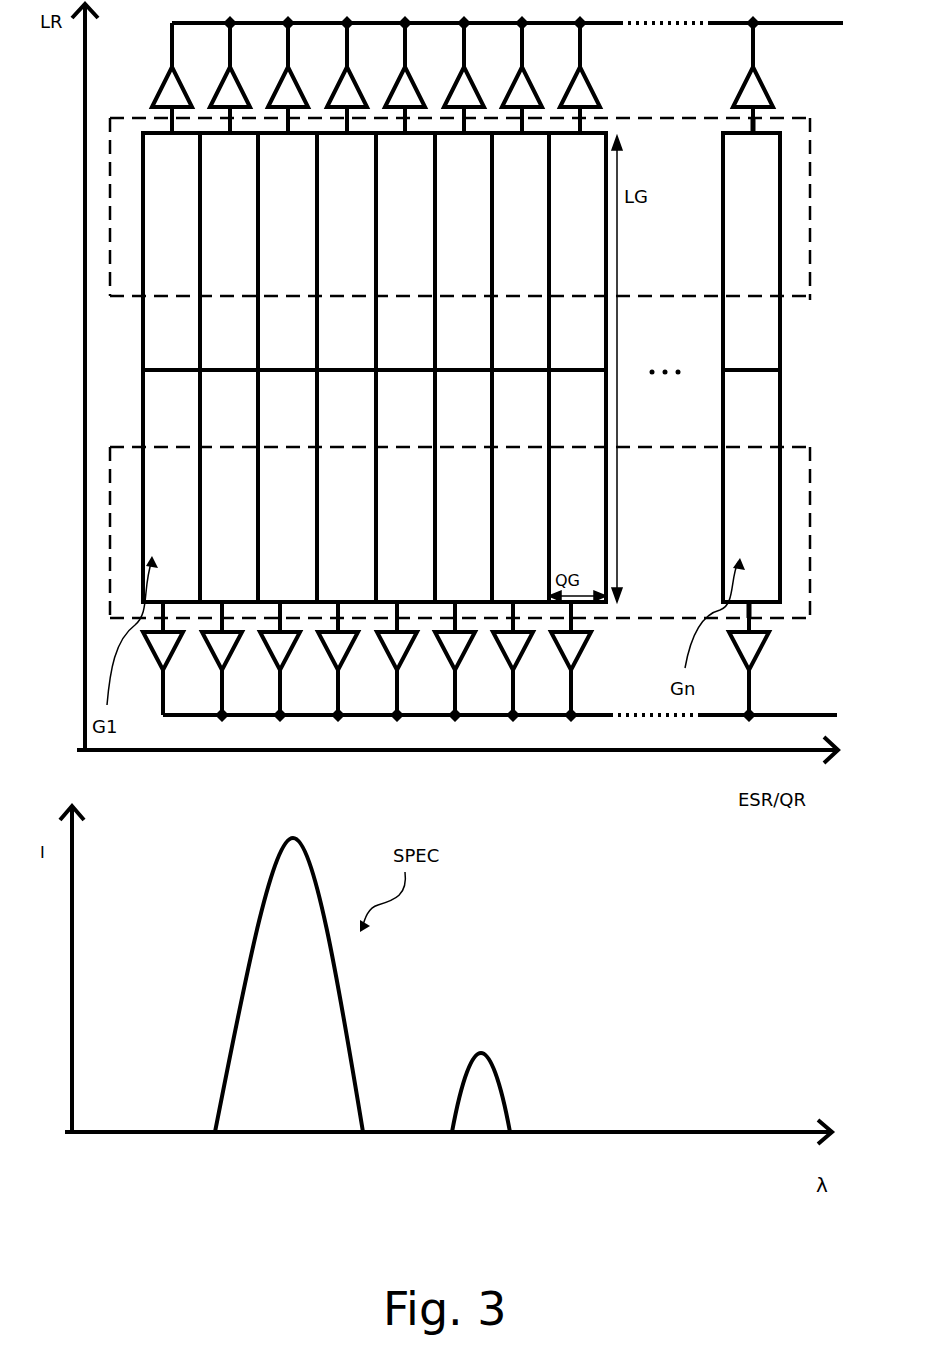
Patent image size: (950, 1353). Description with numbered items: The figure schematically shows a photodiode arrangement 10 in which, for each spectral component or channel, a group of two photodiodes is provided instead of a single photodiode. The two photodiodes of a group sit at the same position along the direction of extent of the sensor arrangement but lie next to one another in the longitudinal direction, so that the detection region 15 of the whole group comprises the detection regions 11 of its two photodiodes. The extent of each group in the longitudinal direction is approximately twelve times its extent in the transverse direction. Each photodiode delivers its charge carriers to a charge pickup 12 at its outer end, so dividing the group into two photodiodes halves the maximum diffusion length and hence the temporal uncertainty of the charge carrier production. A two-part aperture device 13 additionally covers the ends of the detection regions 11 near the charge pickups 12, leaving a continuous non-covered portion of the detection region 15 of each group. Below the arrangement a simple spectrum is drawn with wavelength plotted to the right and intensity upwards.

The photodiode arrangement 10 is at (442, 369).
The detection region 11 is at (165, 320).
The charge pickup 12 is at (766, 126).
The aperture device 13 is at (650, 300).
The detection region of a group 15 is at (140, 380).